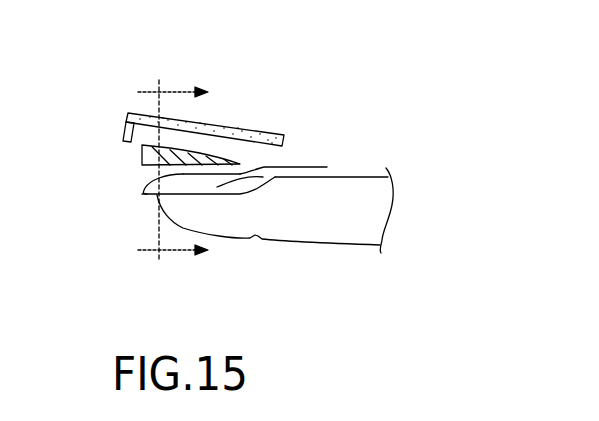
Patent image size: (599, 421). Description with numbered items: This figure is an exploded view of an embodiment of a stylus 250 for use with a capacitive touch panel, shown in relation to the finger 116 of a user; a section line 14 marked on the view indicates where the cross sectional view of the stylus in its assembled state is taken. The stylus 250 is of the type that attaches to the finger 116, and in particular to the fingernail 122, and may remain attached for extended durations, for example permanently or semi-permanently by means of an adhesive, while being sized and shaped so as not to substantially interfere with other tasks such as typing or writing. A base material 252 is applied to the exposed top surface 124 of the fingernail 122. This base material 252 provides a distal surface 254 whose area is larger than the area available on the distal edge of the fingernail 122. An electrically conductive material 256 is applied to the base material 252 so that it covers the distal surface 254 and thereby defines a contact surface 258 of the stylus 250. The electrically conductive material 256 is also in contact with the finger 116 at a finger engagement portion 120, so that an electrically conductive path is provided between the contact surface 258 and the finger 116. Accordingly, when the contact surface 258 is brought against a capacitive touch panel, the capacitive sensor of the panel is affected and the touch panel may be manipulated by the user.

The section line 14 is at (173, 175).
The finger 116 is at (240, 184).
The finger engagement portion 120 is at (289, 121).
The fingernail 122 is at (147, 194).
The exposed top surface 124 is at (327, 167).
The stylus 250 is at (157, 73).
The base material 252 is at (134, 164).
The distal surface 254 is at (140, 150).
The electrically conductive material 256 is at (126, 117).
The contact surface 258 is at (123, 128).